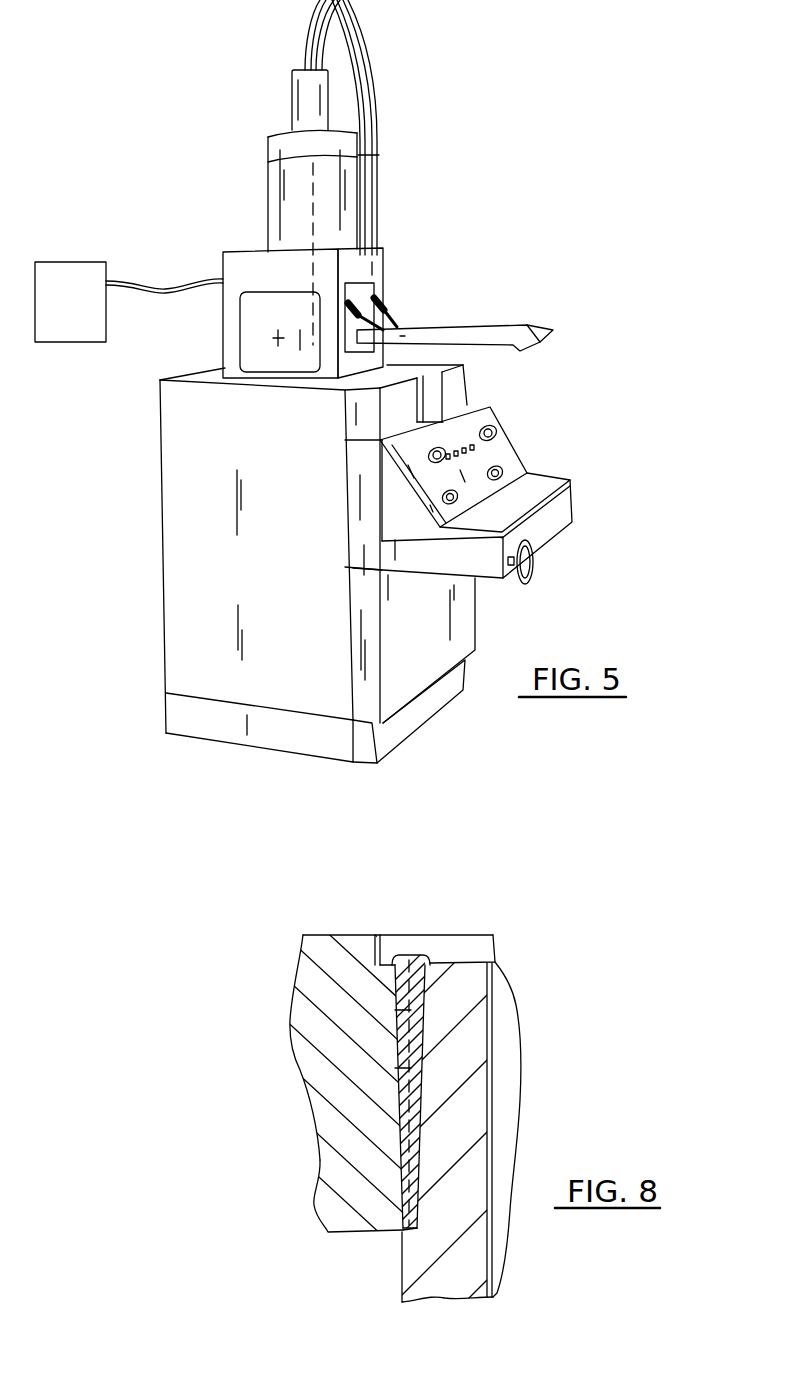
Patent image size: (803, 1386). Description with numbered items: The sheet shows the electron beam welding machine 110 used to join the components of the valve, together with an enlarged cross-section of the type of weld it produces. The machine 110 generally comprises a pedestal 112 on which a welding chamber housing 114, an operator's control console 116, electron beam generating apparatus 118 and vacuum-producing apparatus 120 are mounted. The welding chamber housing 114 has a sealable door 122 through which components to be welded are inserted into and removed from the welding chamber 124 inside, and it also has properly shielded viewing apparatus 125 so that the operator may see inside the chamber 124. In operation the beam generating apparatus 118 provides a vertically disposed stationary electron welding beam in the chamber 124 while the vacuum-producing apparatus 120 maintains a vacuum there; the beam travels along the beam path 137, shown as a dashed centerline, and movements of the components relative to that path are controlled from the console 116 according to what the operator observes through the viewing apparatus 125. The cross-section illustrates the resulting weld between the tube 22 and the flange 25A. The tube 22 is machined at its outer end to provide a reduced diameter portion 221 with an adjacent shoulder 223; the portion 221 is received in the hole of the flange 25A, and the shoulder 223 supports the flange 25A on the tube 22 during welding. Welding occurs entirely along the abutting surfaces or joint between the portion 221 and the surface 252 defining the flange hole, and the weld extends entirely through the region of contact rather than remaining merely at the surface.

In FIG. 5, the electron beam welding machine 110 is at (432, 250).
In FIG. 5, the pedestal 112 is at (237, 528).
In FIG. 5, the welding chamber housing 114 is at (243, 258).
In FIG. 5, the operator's control console 116 is at (500, 450).
In FIG. 5, the electron beam generating apparatus 118 is at (282, 147).
In FIG. 5, the vacuum-producing apparatus 120 is at (80, 262).
In FIG. 5, the sealable door 122 is at (262, 309).
In FIG. 5, the welding chamber 124 is at (283, 339).
In FIG. 5, the viewing apparatus 125 is at (453, 328).
In FIG. 5, the beam path 137 is at (312, 195).
In FIG. 8, the tube 22 is at (483, 1113).
In FIG. 8, the flange 25A is at (347, 1132).
In FIG. 8, the outer reduced diameter portion 221 is at (397, 1068).
In FIG. 8, the shoulder 223 is at (404, 1233).
In FIG. 8, the surface defining hole 252 is at (395, 1010).